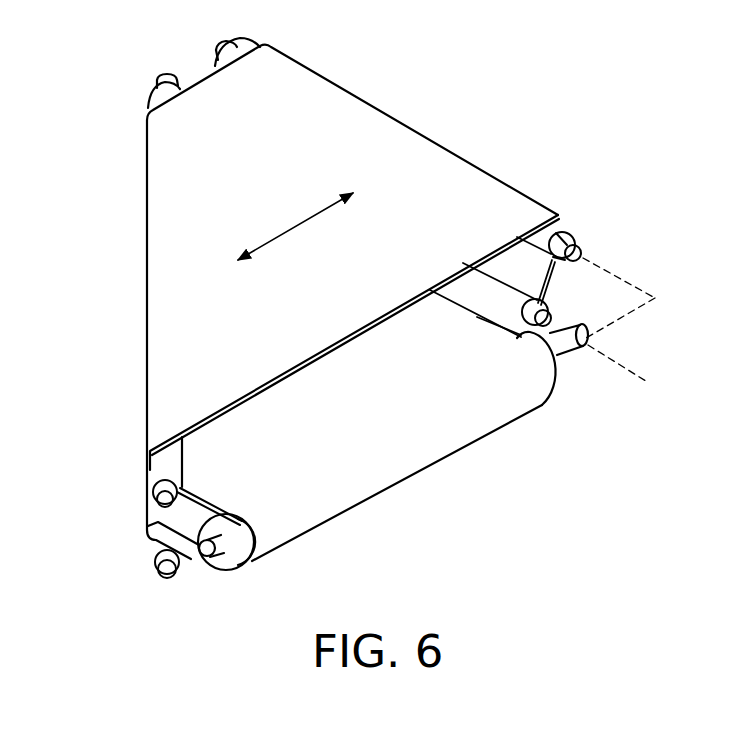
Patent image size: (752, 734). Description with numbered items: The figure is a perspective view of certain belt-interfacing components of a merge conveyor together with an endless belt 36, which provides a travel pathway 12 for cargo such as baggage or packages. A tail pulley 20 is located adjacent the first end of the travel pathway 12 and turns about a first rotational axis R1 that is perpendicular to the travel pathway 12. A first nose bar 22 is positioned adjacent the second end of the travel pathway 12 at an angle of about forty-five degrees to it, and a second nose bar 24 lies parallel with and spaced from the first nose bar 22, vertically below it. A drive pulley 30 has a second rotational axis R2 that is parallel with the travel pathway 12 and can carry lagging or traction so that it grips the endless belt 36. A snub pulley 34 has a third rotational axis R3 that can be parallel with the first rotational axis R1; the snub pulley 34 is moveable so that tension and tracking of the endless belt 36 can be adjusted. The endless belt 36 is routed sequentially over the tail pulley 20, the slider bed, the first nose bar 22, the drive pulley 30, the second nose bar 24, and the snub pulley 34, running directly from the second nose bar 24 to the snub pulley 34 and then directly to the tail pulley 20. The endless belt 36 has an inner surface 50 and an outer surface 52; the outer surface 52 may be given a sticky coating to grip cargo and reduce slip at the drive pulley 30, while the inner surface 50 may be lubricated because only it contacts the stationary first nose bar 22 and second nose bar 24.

The travel pathway 12 is at (295, 222).
The tail pulley 20 is at (583, 236).
The first nose bar 22 is at (169, 470).
The second nose bar 24 is at (153, 552).
The drive pulley 30 is at (552, 380).
The snub pulley 34 is at (490, 297).
The endless belt 36 is at (383, 159).
The inner surface 50 is at (262, 420).
The outer surface 52 is at (152, 332).
The first rotational axis R1 is at (655, 298).
The second rotational axis R2 is at (655, 298).
The third rotational axis R3 is at (637, 381).